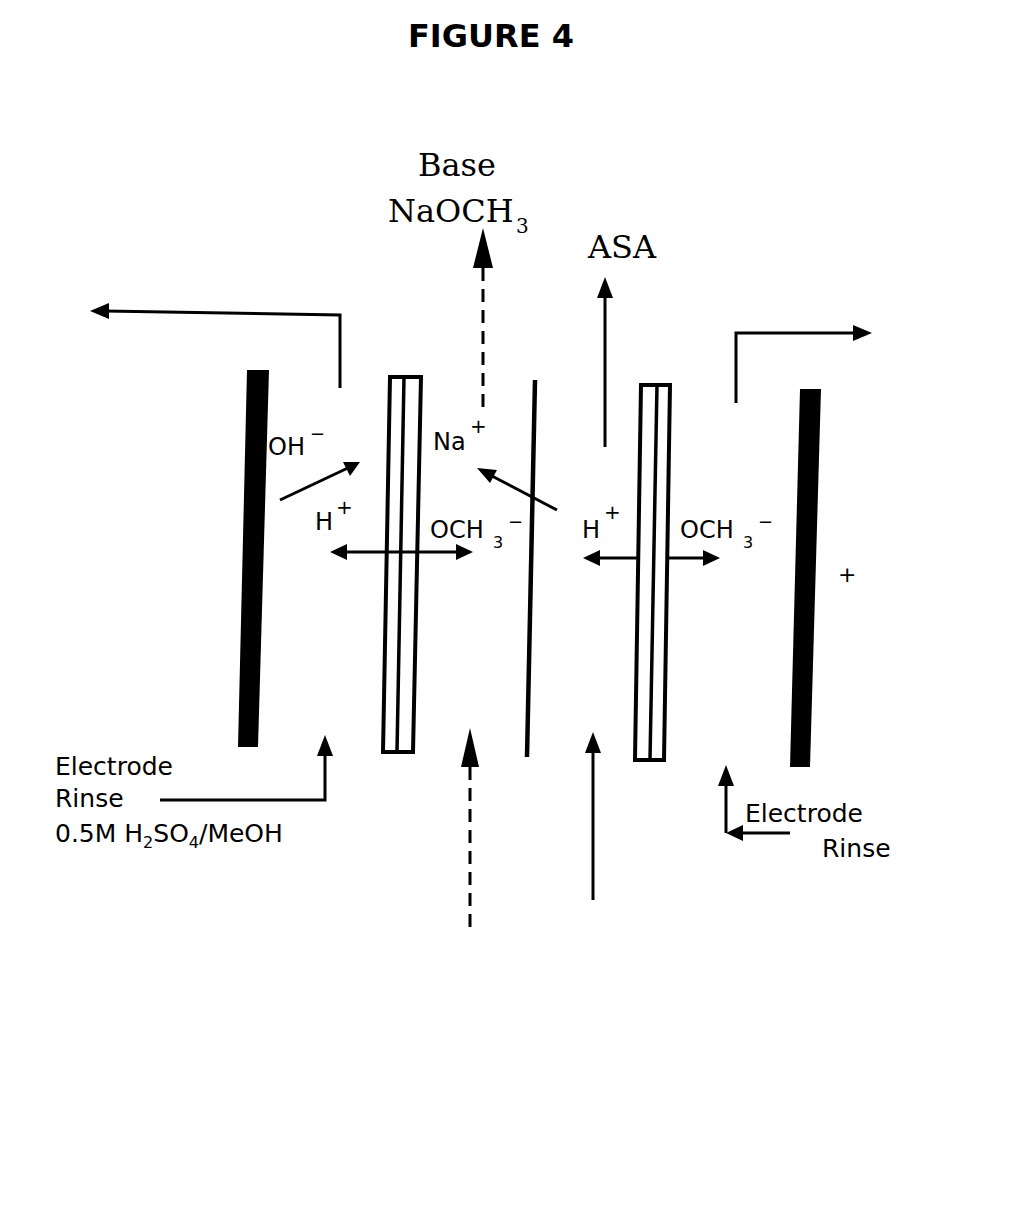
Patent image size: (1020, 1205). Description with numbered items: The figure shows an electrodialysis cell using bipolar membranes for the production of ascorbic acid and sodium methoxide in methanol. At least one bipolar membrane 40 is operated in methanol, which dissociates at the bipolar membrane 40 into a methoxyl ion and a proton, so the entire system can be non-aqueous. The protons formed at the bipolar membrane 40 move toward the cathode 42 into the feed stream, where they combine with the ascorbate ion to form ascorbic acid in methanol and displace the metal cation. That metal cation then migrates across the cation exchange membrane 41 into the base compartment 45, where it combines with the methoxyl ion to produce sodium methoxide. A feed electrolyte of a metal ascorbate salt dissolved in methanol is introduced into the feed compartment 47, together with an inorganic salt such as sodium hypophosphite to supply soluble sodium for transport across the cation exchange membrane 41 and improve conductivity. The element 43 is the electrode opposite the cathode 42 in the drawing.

The bipolar membrane 40 is at (380, 666).
The cation exchange membrane 41 is at (536, 662).
The cathode 42 is at (234, 609).
The anode electrode 43 is at (825, 620).
The base compartment 45 is at (460, 859).
The feed compartment 47 is at (601, 864).